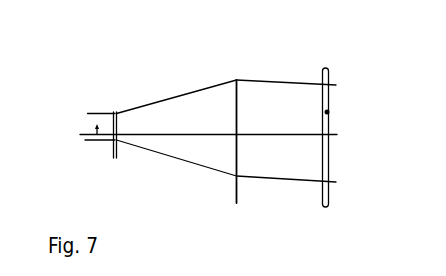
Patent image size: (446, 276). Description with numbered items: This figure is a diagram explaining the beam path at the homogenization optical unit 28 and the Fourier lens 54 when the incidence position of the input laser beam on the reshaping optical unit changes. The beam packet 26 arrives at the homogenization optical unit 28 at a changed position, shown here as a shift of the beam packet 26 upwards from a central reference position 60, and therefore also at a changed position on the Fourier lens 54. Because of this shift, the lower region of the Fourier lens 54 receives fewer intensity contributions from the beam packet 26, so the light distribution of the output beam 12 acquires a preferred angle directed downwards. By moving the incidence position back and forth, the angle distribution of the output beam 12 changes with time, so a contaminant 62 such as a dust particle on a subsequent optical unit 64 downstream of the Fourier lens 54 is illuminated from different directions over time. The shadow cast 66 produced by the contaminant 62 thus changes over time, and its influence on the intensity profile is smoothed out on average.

The output beam 12 is at (272, 180).
The beam packet 26 is at (88, 114).
The homogenization optical unit 28 is at (115, 102).
The Fourier lens 54 is at (237, 80).
The central reference position 60 is at (81, 134).
The contaminant 62 is at (326, 112).
The subsequent optical unit 64 is at (328, 68).
The shadow cast 66 is at (330, 112).